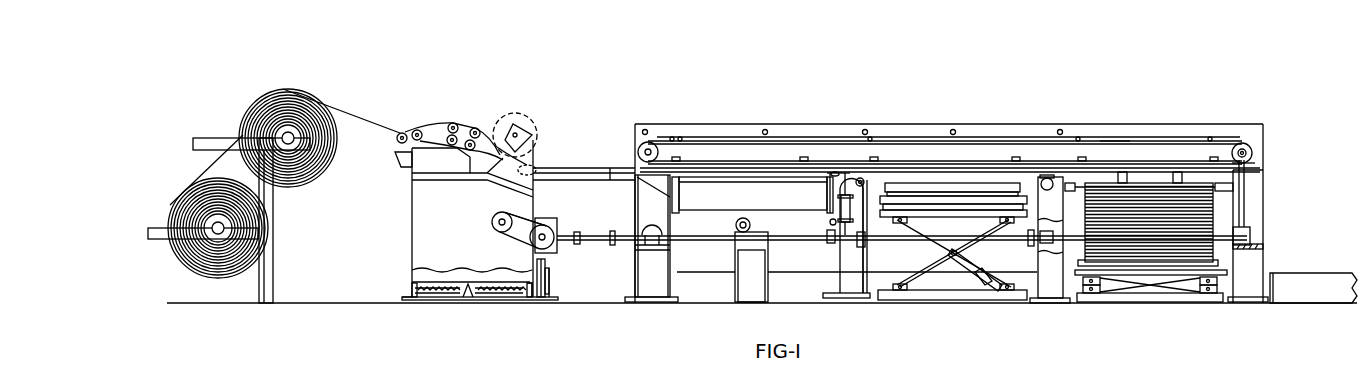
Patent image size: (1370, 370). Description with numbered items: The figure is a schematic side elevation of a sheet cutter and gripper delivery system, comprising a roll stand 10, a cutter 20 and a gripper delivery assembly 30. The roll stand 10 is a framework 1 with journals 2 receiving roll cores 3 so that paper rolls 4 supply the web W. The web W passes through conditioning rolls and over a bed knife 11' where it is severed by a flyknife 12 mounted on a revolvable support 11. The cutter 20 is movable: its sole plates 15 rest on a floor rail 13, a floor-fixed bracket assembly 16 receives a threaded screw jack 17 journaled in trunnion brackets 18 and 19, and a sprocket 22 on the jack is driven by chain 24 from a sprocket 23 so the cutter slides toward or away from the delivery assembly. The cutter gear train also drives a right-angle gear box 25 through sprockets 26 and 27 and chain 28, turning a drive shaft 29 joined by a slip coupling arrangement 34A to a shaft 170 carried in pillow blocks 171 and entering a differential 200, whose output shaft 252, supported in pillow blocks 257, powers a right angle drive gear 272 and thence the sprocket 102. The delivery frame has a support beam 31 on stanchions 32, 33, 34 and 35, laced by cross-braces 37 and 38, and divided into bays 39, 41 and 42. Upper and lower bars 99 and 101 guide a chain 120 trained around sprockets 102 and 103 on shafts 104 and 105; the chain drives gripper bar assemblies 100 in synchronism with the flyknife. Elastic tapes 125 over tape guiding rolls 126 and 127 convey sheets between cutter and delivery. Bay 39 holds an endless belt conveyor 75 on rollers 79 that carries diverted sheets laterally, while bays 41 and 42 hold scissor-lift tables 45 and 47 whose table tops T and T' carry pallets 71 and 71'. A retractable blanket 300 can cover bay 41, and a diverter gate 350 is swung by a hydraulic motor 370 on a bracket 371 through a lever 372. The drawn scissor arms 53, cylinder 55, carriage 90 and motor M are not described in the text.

The framework 1 is at (274, 258).
The journals 2 is at (296, 146).
The roll cores 3 is at (293, 132).
The paper rolls 4 is at (336, 143).
The roll stand 10 is at (262, 301).
The web W is at (360, 121).
The revolvable support 11 is at (531, 128).
The bed knife 11' is at (543, 150).
The flyknife 12 is at (503, 125).
The rail 13 is at (556, 305).
The sole plate 15 is at (547, 294).
The bracket assembly 16 is at (470, 298).
The screw jack 17 is at (500, 295).
The trunnion bracket 18 is at (407, 296).
The trunnion bracket 19 is at (532, 298).
The cutter 20 is at (412, 292).
The sprocket 22 is at (552, 276).
The sprocket 23 is at (536, 264).
The chain 24 is at (549, 280).
The right-angle gear box 25 is at (557, 233).
The sprocket 26 is at (494, 219).
The sprocket 27 is at (546, 226).
The chain 28 is at (525, 220).
The drive shaft 29 is at (594, 236).
The gripper delivery assembly 30 is at (883, 126).
The support beam 31 is at (1130, 127).
The stanchion 32 is at (659, 294).
The stanchion 33 is at (842, 299).
The stanchion 34 is at (1052, 300).
The slip coupling arrangement 34A is at (624, 243).
The stanchion 35 is at (1268, 298).
The cross-brace 37 is at (646, 128).
The cross-brace 38 is at (683, 246).
The bay 39 is at (702, 306).
The bay 41 is at (952, 306).
The bay 42 is at (1133, 304).
The scissor-lift table 45 is at (968, 253).
The scissor-lift table 47 is at (1206, 304).
The scissor arms 53 is at (945, 248).
The hydraulic cylinder 55 is at (986, 296).
The pallet 71 is at (940, 199).
The pallet 71' is at (1170, 267).
The endless belt conveyor 75 is at (772, 205).
The roller 79 is at (679, 192).
The carriage 90 is at (785, 160).
The upper bar 99 is at (1106, 142).
The gripper bar assembly 100 is at (690, 143).
The lower bar 101 is at (723, 165).
The sprocket 102 is at (1248, 172).
The sprocket 103 is at (660, 146).
The shaft 104 is at (686, 144).
The shaft 105 is at (1262, 158).
The chain 120 is at (1252, 150).
The elastic tapes 125 is at (588, 167).
The tape guiding roll 126 is at (538, 167).
The tape guiding roll 127 is at (626, 164).
The shaft 170 is at (696, 242).
The pillow block 171 is at (652, 225).
The differential 200 is at (855, 290).
The shaft 252 is at (795, 243).
The pillow block 257 is at (868, 240).
The right angle drive gear 272 is at (1253, 162).
The retractable blanket 300 is at (752, 222).
The diverter gate 350 is at (834, 171).
The hydraulic motor 370 is at (836, 241).
The bracket 371 is at (845, 245).
The lever 372 is at (861, 177).
The motor M is at (1047, 191).
The table top T is at (941, 236).
The table top T' is at (1151, 306).